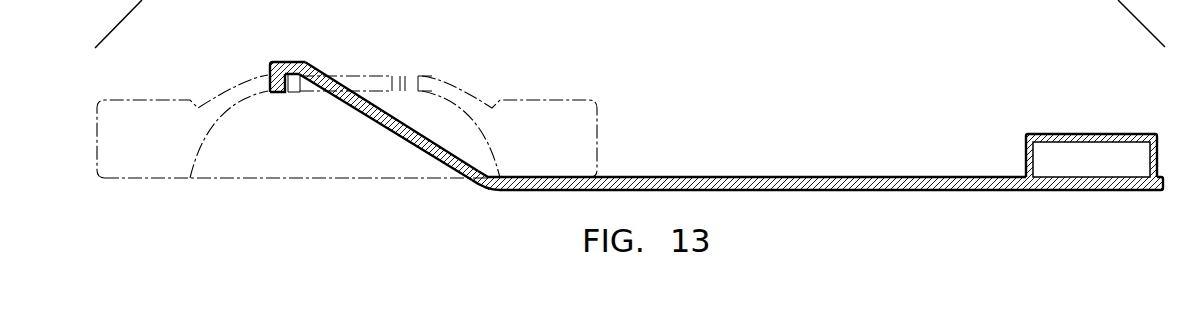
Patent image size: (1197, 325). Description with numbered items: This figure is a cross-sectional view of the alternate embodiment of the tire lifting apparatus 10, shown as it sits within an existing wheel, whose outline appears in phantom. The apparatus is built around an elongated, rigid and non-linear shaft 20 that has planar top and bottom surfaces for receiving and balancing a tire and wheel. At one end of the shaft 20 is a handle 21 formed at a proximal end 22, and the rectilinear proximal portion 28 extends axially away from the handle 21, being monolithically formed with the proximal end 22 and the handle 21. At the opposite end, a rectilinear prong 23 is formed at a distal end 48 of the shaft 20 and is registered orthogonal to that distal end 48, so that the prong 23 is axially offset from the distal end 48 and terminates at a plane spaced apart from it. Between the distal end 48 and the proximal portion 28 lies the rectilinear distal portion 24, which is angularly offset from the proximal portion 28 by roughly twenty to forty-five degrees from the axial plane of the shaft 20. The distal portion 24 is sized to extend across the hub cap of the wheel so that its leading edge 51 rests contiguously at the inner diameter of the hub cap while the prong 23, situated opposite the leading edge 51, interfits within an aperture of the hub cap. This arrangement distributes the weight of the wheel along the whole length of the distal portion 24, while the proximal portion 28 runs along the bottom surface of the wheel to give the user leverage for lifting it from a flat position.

The tire lifting apparatus 10 is at (733, 127).
The shaft 20 is at (850, 168).
The handle 21 is at (1057, 135).
The proximal end 22 is at (1070, 190).
The prong 23 is at (280, 92).
The distal portion 24 is at (360, 105).
The proximal portion 28 is at (768, 190).
The distal end 48 is at (275, 62).
The leading edge 51 is at (490, 190).